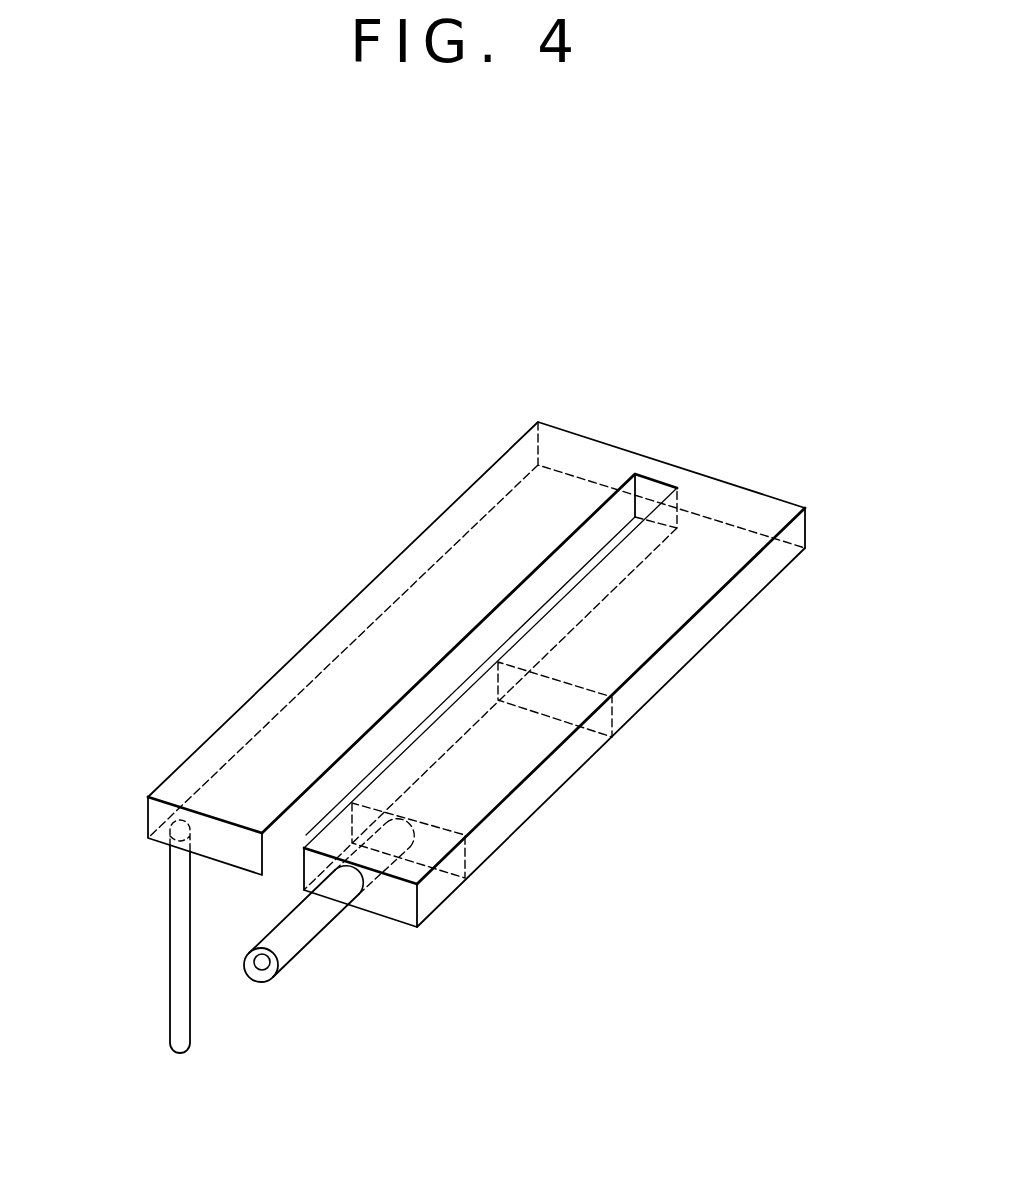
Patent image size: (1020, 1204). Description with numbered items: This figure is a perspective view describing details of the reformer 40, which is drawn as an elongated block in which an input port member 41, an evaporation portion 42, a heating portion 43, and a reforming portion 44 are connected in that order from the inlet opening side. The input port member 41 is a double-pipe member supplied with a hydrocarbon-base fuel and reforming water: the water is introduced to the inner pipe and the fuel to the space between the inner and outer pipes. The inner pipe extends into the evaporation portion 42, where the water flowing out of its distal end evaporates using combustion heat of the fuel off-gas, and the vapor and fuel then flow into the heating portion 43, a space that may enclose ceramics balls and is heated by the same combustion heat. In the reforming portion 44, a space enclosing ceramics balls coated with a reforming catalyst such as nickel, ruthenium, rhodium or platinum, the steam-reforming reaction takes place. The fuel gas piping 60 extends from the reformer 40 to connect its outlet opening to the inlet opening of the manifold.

The reformer 40 is at (697, 411).
The input port member 41 is at (320, 938).
The evaporation portion 42 is at (437, 890).
The heating portion 43 is at (537, 797).
The reforming portion 44 is at (714, 622).
The fuel gas piping 60 is at (170, 935).